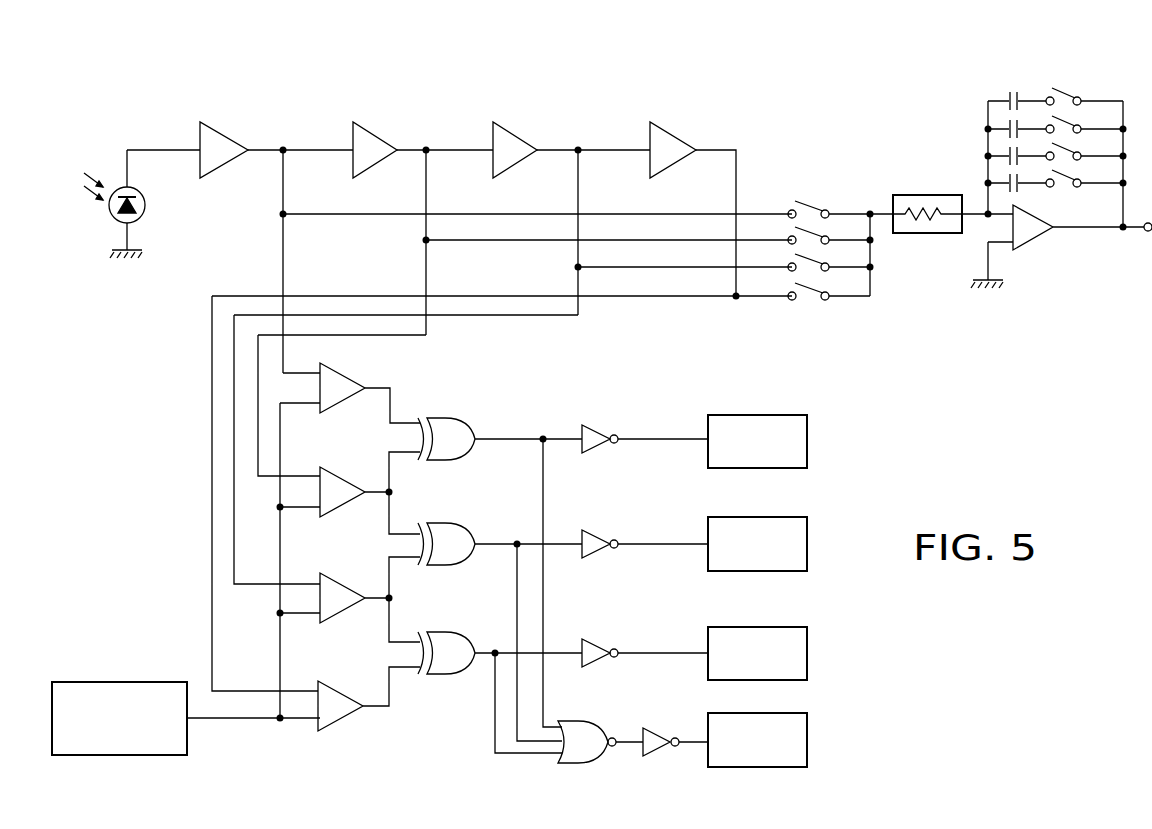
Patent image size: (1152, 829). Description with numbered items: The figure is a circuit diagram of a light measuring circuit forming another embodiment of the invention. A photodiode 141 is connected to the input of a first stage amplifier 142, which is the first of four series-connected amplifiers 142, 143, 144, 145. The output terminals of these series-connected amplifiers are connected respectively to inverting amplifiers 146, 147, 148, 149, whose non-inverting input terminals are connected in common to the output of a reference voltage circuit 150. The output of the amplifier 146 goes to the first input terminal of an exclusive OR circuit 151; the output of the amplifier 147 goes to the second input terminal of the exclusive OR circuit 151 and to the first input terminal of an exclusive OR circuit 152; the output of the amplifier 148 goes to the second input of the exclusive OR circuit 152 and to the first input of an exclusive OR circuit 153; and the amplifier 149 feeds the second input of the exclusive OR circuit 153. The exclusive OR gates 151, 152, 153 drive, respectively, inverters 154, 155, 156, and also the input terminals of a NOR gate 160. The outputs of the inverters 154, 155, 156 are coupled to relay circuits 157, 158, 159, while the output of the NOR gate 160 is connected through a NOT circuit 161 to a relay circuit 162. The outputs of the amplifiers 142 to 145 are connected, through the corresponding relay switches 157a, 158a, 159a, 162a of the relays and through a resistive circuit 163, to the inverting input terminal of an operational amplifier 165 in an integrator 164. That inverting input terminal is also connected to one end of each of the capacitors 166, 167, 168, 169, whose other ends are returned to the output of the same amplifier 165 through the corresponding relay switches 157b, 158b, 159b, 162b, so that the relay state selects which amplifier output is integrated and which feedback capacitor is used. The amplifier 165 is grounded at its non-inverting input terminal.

The photodiode 141 is at (147, 208).
The first stage amplifier 142 is at (237, 137).
The amplifier 143 is at (387, 137).
The amplifier 144 is at (527, 137).
The amplifier 145 is at (686, 137).
The inverting amplifier 146 is at (342, 370).
The inverting amplifier 147 is at (342, 473).
The inverting amplifier 148 is at (342, 579).
The inverting amplifier 149 is at (342, 687).
The reference voltage circuit 150 is at (116, 672).
The exclusive OR circuit 151 is at (458, 417).
The exclusive OR circuit 152 is at (458, 522).
The exclusive OR circuit 153 is at (458, 632).
The inverter 154 is at (586, 418).
The inverter 155 is at (586, 523).
The inverter 156 is at (586, 633).
The relay circuit 157 is at (809, 450).
The relay circuit 158 is at (809, 555).
The relay circuit 159 is at (809, 665).
The relay circuit 162 is at (809, 750).
The relay switch 157a is at (806, 197).
The relay switch 158a is at (806, 228).
The relay switch 159a is at (806, 255).
The relay switch 162a is at (806, 284).
The relay switch 157b is at (1062, 86).
The relay switch 158b is at (1062, 114).
The relay switch 159b is at (1062, 141).
The relay switch 162b is at (1060, 188).
The NOR gate 160 is at (583, 718).
The NOT circuit 161 is at (653, 718).
The resistive circuit 163 is at (930, 235).
The integrator 164 is at (1125, 92).
The operational amplifier 165 is at (1030, 248).
The capacitor 166 is at (1010, 91).
The capacitor 167 is at (1002, 123).
The capacitor 168 is at (1002, 150).
The capacitor 169 is at (1002, 177).